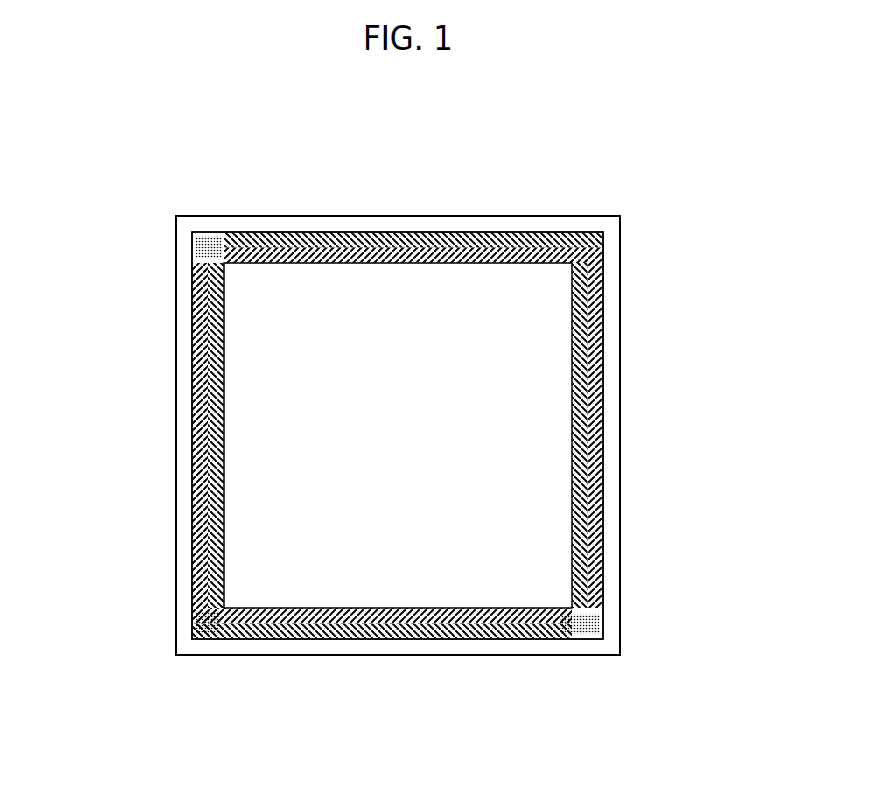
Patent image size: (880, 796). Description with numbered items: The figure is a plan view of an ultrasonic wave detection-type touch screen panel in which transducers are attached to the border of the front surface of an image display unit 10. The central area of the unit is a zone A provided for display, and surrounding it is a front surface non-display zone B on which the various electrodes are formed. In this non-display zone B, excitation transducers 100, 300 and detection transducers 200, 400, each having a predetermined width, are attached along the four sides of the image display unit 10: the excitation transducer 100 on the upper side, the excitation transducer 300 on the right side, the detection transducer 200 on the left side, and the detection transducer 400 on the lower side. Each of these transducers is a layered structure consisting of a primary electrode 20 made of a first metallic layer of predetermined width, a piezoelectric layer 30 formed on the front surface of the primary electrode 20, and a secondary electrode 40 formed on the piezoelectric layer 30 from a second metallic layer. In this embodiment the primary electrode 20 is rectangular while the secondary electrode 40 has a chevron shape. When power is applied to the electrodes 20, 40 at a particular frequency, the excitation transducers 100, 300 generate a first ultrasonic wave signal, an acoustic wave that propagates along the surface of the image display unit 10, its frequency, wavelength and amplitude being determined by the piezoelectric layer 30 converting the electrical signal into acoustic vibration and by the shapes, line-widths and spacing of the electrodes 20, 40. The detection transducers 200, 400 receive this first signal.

The excitation transducer 100 is at (202, 194).
The image display unit 10 is at (634, 364).
The primary electrode 20 is at (602, 256).
The piezoelectric layer 30 is at (587, 242).
The secondary electrode 40 is at (512, 235).
The detection transducer 200 is at (156, 611).
The excitation transducer 300 is at (643, 227).
The detection transducer 400 is at (585, 684).
The zone provided for display A is at (380, 292).
The front surface non-display zone B is at (626, 476).